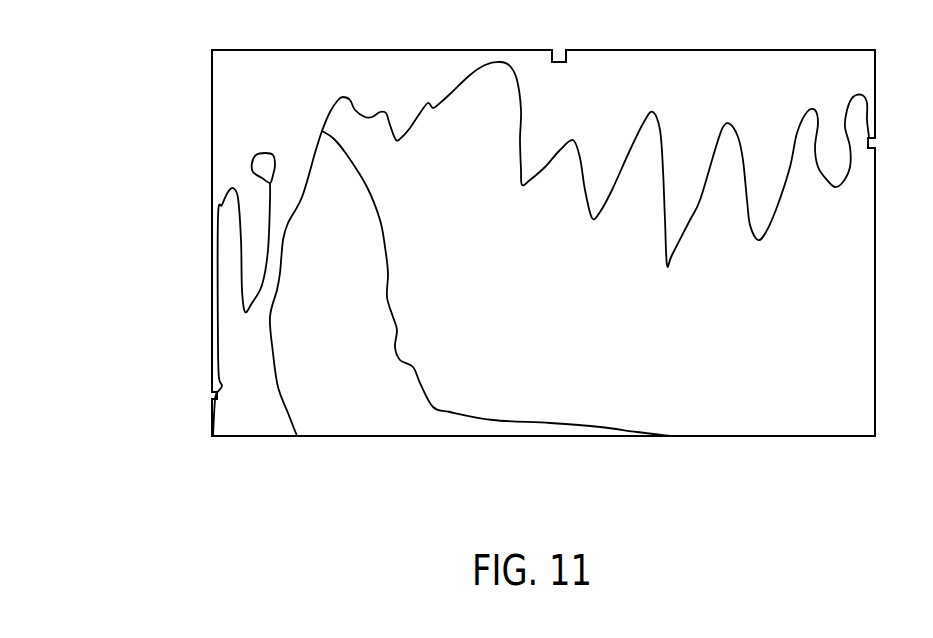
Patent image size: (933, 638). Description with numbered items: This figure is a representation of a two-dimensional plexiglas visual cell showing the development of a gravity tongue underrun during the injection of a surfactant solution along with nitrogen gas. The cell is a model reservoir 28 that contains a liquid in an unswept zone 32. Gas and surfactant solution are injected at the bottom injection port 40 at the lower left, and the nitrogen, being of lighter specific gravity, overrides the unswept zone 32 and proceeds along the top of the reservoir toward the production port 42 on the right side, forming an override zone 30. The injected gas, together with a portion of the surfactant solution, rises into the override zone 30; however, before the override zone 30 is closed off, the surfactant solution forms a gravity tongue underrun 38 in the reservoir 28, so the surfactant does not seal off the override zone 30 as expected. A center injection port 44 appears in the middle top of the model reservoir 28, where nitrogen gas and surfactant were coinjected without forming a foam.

The reservoir 28 is at (875, 287).
The override zone 30 is at (611, 109).
The unswept zone 32 is at (568, 294).
The gravity tongue underrun 38 is at (372, 418).
The injection port 40 is at (209, 394).
The production port 42 is at (876, 143).
The center injection port 44 is at (562, 50).